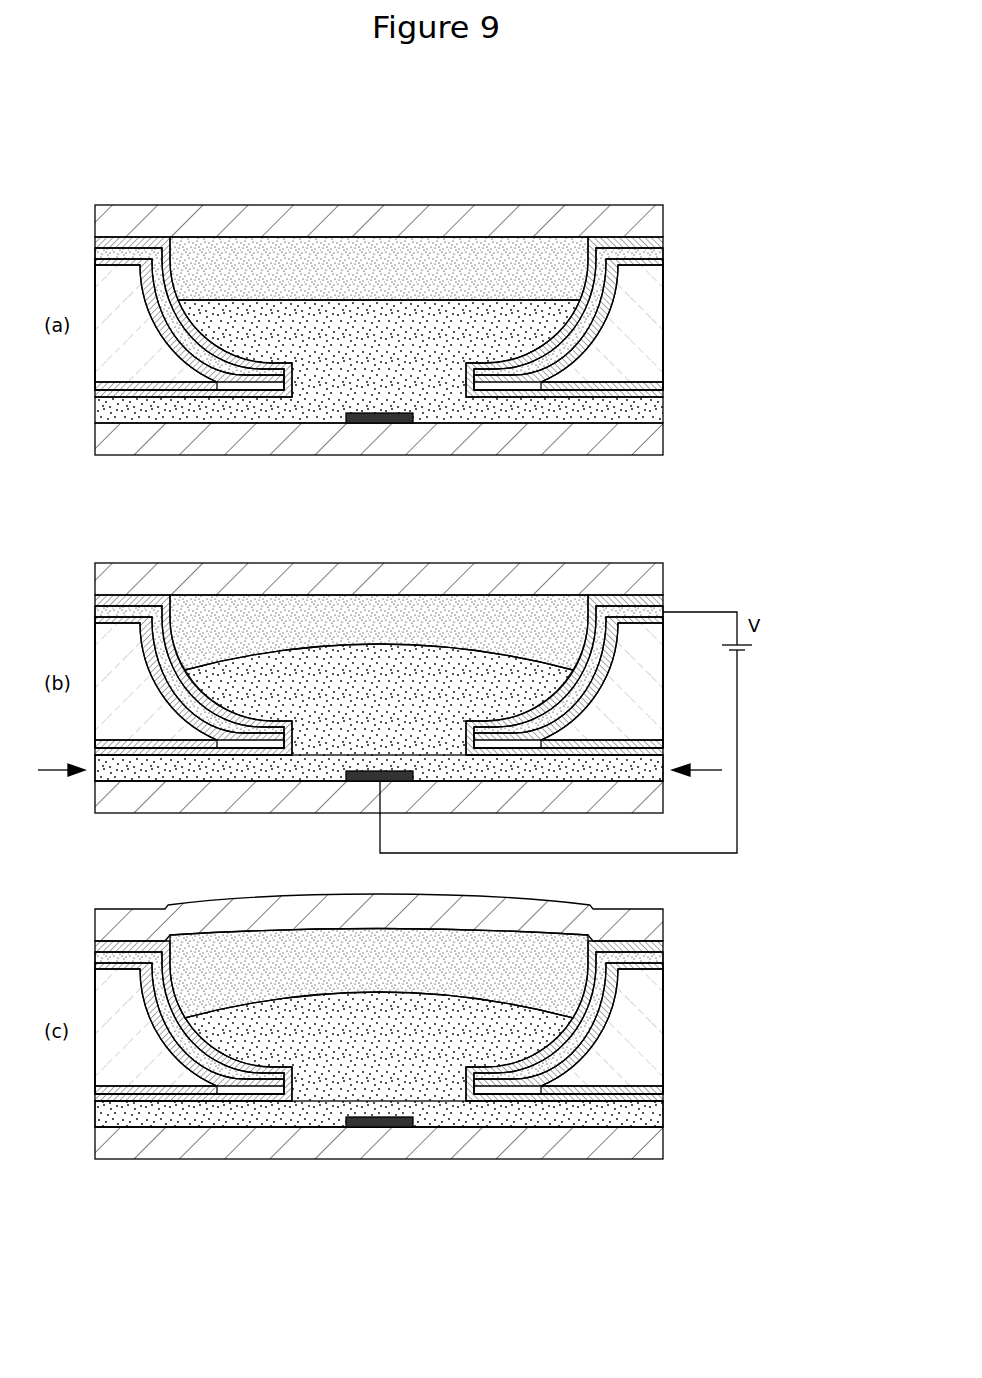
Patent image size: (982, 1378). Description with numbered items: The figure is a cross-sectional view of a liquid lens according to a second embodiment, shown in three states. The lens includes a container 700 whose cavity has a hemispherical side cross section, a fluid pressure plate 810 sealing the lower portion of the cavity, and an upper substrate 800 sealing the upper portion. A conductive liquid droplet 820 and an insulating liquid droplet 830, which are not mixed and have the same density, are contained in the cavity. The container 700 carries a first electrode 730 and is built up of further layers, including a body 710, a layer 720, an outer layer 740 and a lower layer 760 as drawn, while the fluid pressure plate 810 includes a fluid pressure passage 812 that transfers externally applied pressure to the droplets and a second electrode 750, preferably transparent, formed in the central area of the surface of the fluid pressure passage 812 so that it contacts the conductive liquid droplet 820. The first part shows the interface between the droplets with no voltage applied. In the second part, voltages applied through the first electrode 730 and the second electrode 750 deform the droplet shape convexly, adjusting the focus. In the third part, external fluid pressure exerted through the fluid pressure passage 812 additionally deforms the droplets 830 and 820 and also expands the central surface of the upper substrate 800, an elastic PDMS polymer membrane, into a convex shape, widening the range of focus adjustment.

The container 700 is at (467, 664).
The body 710 is at (645, 330).
The electrode layer 720 is at (620, 282).
The first electrode 730 is at (660, 252).
The hydrophobic layer 740 is at (655, 241).
The second electrode 750 is at (363, 423).
The electrode pad layer 760 is at (556, 318).
The upper substrate 800 is at (534, 212).
The fluid pressure plate 810 is at (632, 440).
The fluid pressure passage 812 is at (652, 763).
The conductive liquid droplet 820 is at (298, 320).
The insulating liquid droplet 830 is at (408, 265).